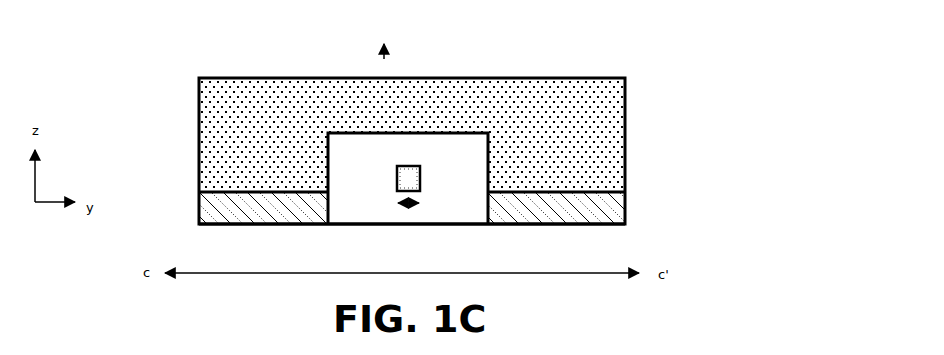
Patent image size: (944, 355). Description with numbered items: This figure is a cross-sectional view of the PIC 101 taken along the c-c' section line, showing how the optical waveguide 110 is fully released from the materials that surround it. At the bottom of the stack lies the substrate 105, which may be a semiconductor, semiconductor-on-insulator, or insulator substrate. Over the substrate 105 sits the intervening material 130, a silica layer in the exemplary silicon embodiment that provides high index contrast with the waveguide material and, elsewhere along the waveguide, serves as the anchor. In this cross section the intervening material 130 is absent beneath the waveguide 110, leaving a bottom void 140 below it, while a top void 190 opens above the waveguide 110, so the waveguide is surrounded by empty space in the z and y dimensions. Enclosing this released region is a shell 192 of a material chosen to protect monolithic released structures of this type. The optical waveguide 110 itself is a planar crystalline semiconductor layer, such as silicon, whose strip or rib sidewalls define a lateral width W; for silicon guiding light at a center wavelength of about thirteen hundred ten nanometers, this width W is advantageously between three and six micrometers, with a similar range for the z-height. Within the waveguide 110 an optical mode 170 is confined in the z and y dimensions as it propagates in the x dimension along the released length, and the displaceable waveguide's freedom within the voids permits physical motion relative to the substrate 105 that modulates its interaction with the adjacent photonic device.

The PIC 101 is at (146, 100).
The substrate 105 is at (435, 252).
The optical waveguide 110 is at (398, 169).
The intervening material 130 is at (273, 214).
The bottom void 140 is at (374, 214).
The optical mode 170 is at (421, 190).
The top void 190 is at (471, 158).
The shell 192 is at (272, 138).
The waveguide width W is at (408, 212).